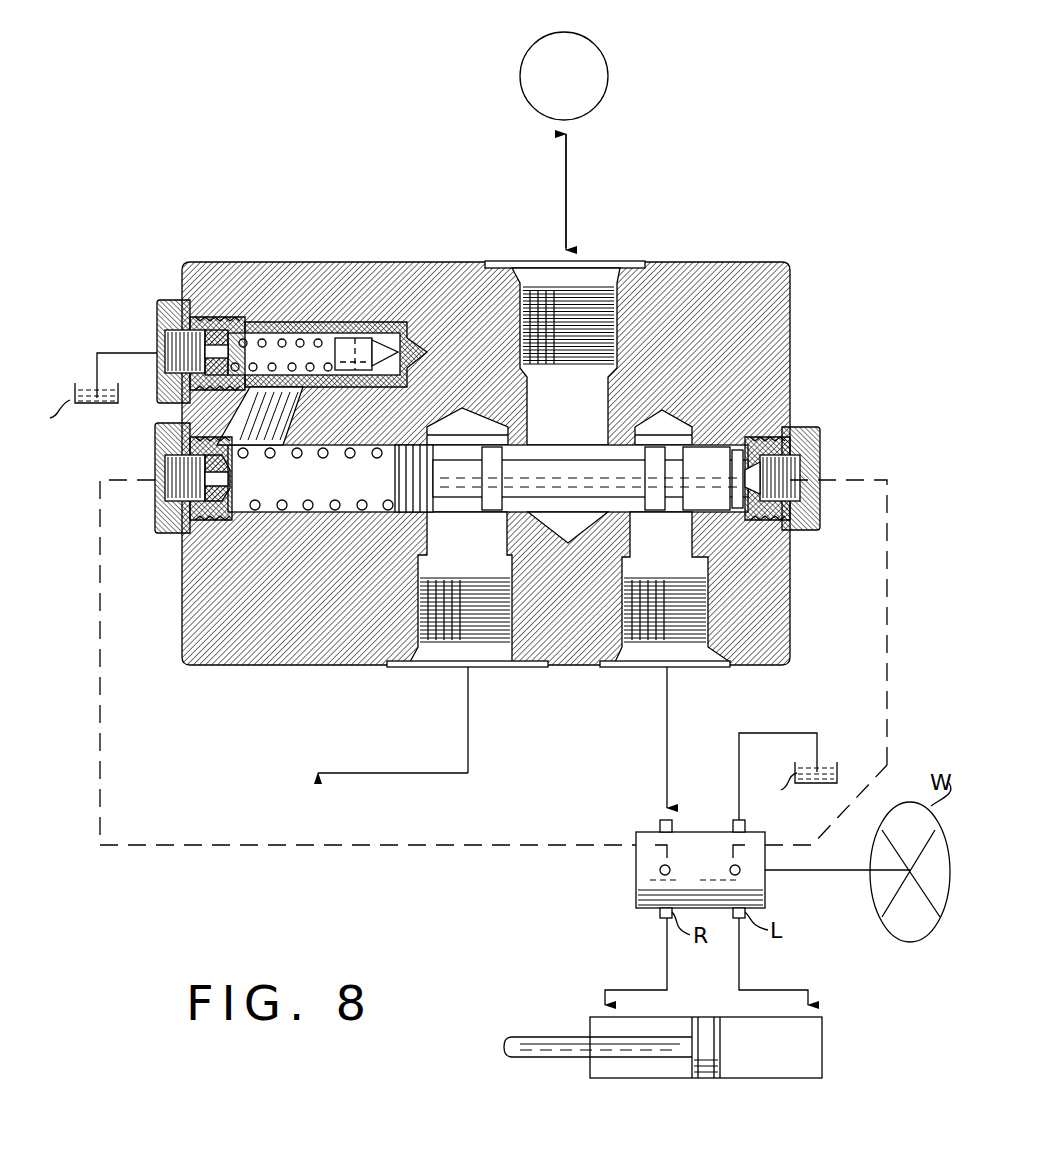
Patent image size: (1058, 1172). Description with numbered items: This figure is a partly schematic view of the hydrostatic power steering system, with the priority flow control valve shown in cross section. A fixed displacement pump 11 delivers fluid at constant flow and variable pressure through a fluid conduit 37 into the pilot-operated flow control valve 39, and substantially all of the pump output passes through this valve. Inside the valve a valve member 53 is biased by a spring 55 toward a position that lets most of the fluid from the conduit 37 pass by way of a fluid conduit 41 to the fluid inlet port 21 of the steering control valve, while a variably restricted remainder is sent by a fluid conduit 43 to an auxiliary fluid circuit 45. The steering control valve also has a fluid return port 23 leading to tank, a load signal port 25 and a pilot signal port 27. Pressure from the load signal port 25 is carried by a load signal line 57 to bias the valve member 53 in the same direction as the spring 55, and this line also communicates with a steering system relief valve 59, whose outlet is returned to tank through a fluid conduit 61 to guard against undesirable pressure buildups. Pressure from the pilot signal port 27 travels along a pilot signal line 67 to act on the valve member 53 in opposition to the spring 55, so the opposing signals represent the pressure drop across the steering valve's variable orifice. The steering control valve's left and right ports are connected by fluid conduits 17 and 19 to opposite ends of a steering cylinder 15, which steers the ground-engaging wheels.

The fixed displacement pump 11 is at (623, 62).
The fluid conduit 37 is at (567, 158).
The pilot-operated flow control valve 39 is at (707, 252).
The steering system relief valve 59 is at (373, 350).
The fluid conduit 61 is at (133, 352).
The valve member 53 is at (592, 466).
The spring 55 is at (308, 508).
The load signal line 57 is at (102, 698).
The pilot signal line 67 is at (887, 588).
The fluid conduit 43 is at (470, 712).
The auxiliary fluid circuit 45 is at (393, 774).
The fluid conduit 41 is at (667, 722).
The fluid inlet port 21 is at (659, 825).
The fluid return port 23 is at (732, 826).
The load signal port 25 is at (660, 870).
The pilot signal port 27 is at (740, 872).
The fluid conduit 19 is at (660, 960).
The fluid conduit 17 is at (742, 962).
The steering cylinder 15 is at (708, 1088).